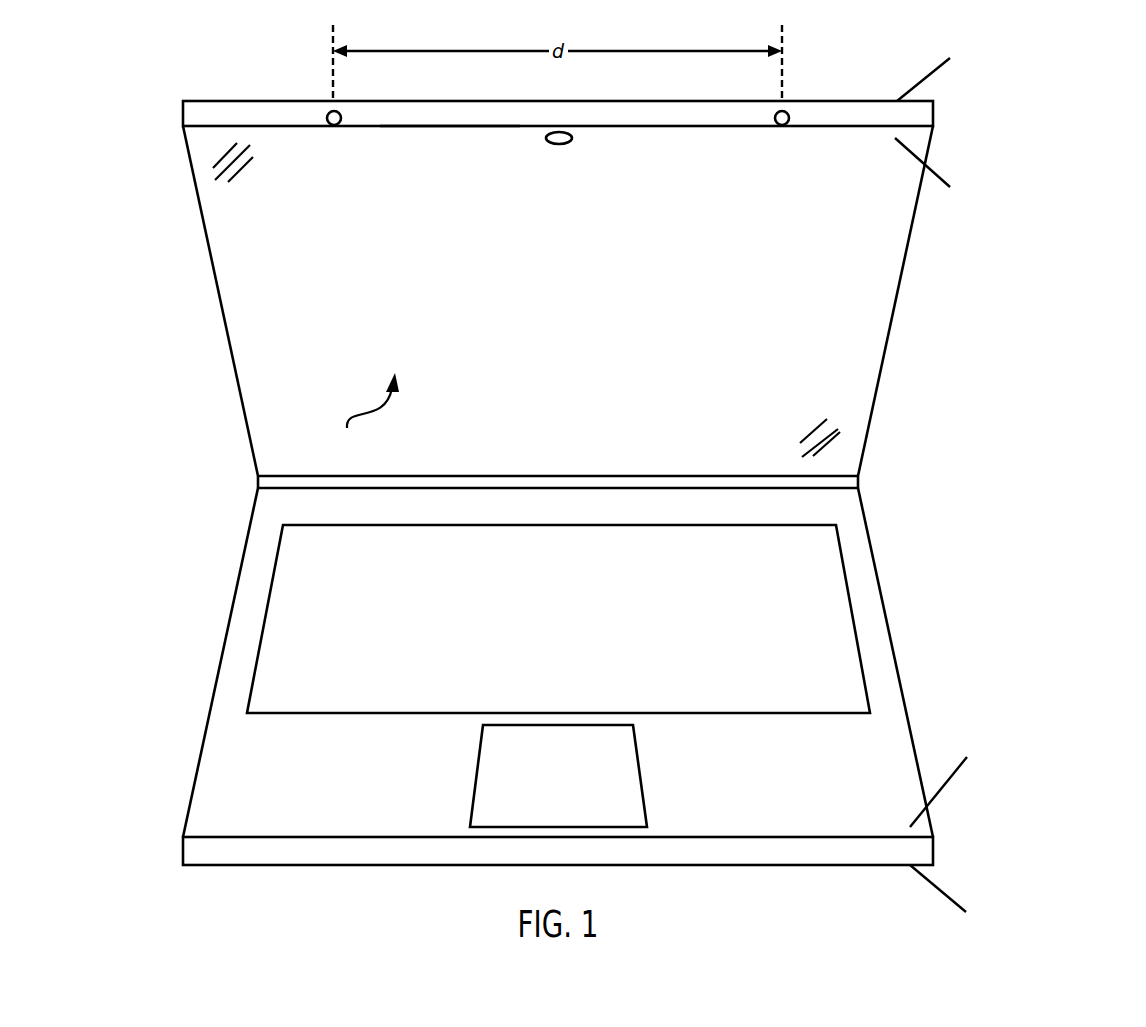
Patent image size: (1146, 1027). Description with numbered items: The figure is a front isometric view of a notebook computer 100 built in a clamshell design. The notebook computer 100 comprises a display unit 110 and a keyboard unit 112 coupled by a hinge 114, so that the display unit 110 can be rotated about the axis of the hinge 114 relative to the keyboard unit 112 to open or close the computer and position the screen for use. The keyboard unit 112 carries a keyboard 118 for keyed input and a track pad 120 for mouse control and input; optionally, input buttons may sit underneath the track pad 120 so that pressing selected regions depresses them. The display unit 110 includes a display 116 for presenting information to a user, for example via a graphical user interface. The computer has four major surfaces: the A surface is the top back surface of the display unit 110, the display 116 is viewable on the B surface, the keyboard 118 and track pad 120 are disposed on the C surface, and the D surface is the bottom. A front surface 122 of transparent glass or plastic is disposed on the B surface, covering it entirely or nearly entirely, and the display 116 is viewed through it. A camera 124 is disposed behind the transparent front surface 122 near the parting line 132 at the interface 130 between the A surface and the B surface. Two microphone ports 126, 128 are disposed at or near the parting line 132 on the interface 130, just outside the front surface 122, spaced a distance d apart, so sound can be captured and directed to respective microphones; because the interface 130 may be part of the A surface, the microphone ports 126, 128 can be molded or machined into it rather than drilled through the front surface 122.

The notebook computer 100 is at (1060, 160).
The display unit 110 is at (220, 213).
The keyboard unit 112 is at (221, 753).
The hinge 114 is at (862, 482).
The display 116 is at (573, 328).
The keyboard 118 is at (573, 629).
The track pad 120 is at (620, 800).
The front surface 122 is at (366, 413).
The camera 124 is at (557, 144).
The microphone port 126 is at (333, 126).
The microphone port 128 is at (780, 126).
The interface 130 is at (183, 113).
The parting line 132 is at (447, 127).
The A surface A is at (930, 69).
The B surface B is at (929, 171).
The C surface C is at (944, 780).
The D surface D is at (944, 896).